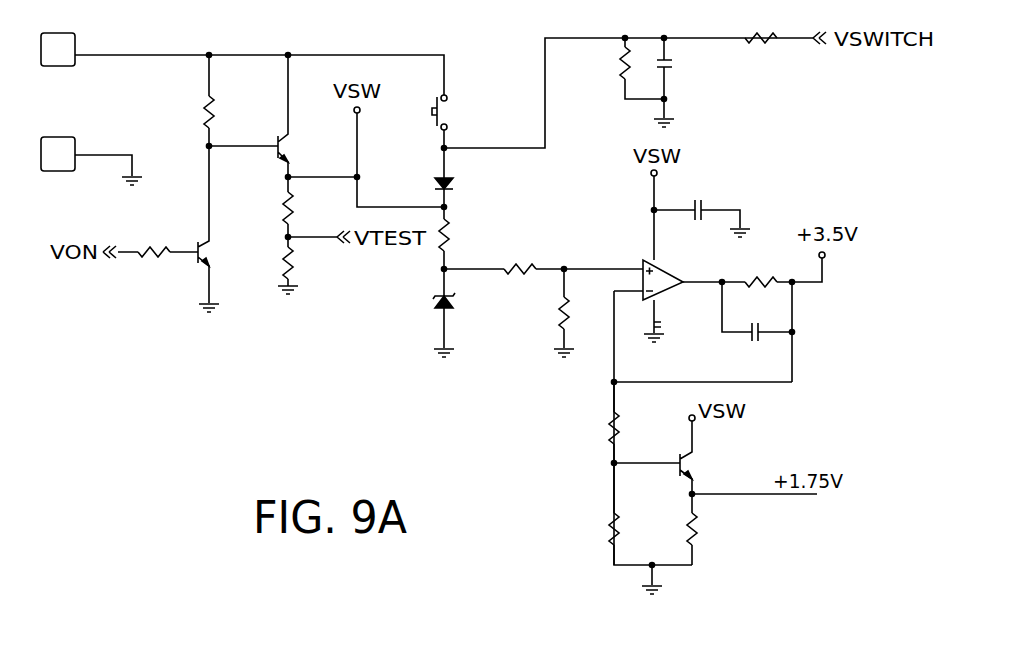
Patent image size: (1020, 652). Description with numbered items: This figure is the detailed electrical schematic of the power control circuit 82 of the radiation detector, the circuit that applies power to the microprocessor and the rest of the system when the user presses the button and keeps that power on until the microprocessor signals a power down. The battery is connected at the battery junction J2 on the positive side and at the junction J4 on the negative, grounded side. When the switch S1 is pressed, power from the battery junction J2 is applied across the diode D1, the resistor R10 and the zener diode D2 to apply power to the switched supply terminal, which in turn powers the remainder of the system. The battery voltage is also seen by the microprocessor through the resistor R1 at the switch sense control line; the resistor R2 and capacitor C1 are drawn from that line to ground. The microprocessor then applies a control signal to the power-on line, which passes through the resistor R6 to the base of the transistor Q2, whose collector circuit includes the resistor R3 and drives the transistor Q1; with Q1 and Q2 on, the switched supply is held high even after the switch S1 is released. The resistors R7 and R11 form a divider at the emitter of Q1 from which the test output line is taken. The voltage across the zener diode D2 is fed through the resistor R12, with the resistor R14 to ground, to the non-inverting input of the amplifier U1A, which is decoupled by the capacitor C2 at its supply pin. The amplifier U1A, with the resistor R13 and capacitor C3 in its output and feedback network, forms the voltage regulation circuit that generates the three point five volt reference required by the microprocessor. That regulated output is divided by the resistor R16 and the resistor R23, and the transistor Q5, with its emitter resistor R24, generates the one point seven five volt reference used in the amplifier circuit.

The power control circuit 82 is at (389, 356).
The battery junction J2 is at (68, 51).
The battery negative connector J4 is at (90, 155).
The resistor R1 is at (761, 27).
The resistor R2 is at (626, 68).
The resistor R3 is at (192, 100).
The resistor R6 is at (158, 240).
The resistor R7 is at (303, 207).
The resistor R10 is at (468, 238).
The resistor R11 is at (308, 265).
The resistor R12 is at (504, 258).
The resistor R13 is at (757, 270).
The resistor R14 is at (547, 313).
The resistor R16 is at (590, 422).
The resistor R23 is at (626, 514).
The resistor R24 is at (715, 529).
The capacitor C1 is at (680, 82).
The capacitor C2 is at (702, 213).
The capacitor C3 is at (757, 332).
The diode D1 is at (460, 177).
The zener diode D2 is at (460, 313).
The transistor Q1 is at (265, 116).
The transistor Q2 is at (221, 229).
The transistor Q5 is at (671, 454).
The switch S1 is at (456, 117).
The amplifier U1A is at (676, 256).